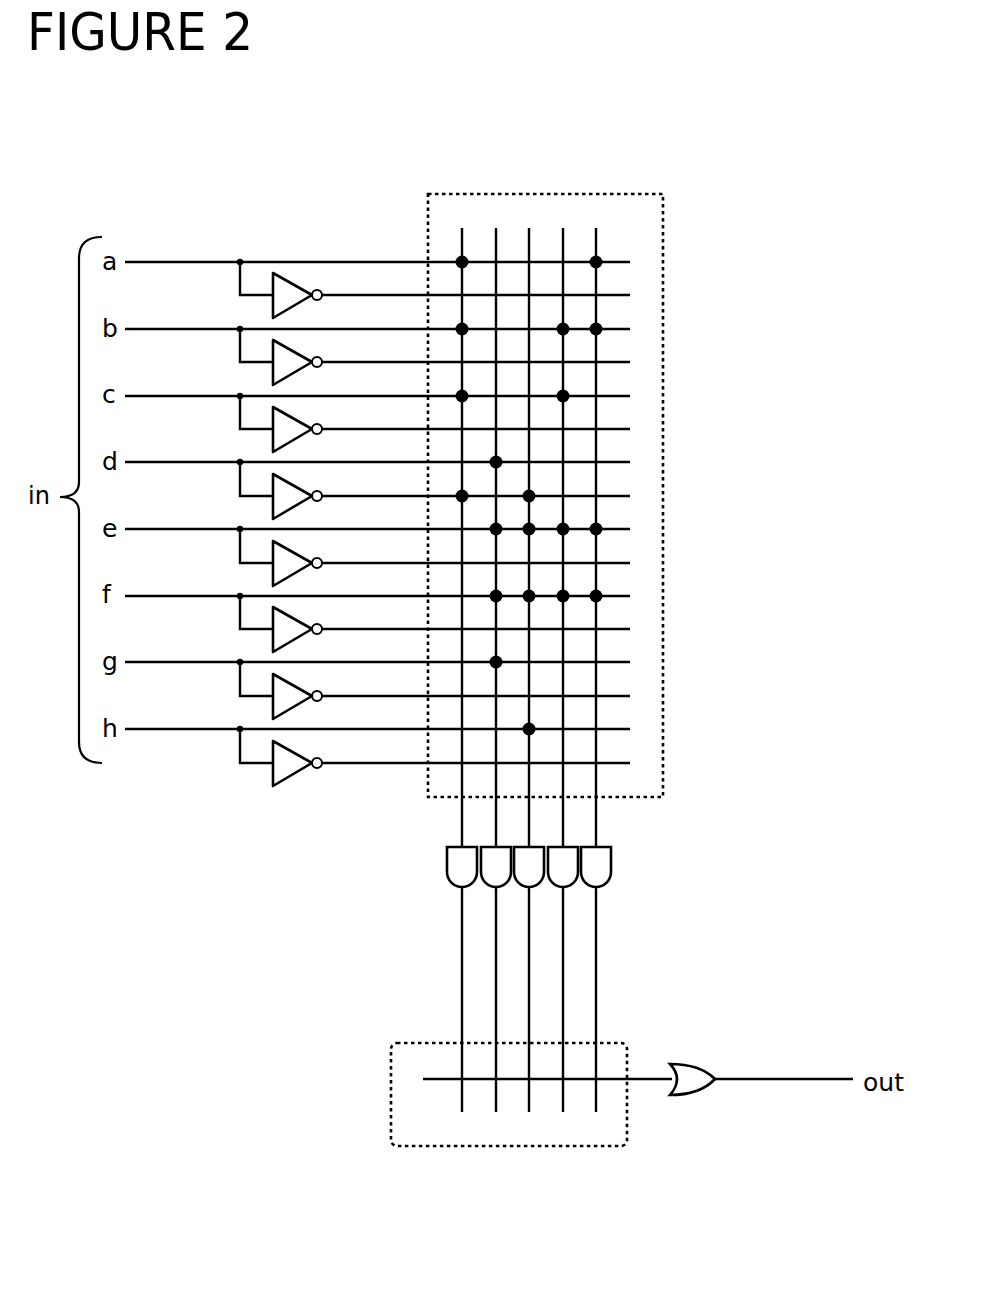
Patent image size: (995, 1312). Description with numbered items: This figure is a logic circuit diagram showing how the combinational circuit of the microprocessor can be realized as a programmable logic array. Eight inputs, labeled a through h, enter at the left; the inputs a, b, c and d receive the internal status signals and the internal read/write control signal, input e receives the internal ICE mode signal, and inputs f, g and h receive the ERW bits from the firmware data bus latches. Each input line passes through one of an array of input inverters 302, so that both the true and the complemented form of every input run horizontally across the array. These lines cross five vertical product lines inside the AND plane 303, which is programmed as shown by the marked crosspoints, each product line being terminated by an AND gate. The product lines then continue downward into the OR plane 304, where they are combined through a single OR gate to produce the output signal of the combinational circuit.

The input inverters 302 is at (288, 280).
The AND plane 303 is at (598, 194).
The OR plane 304 is at (391, 1088).